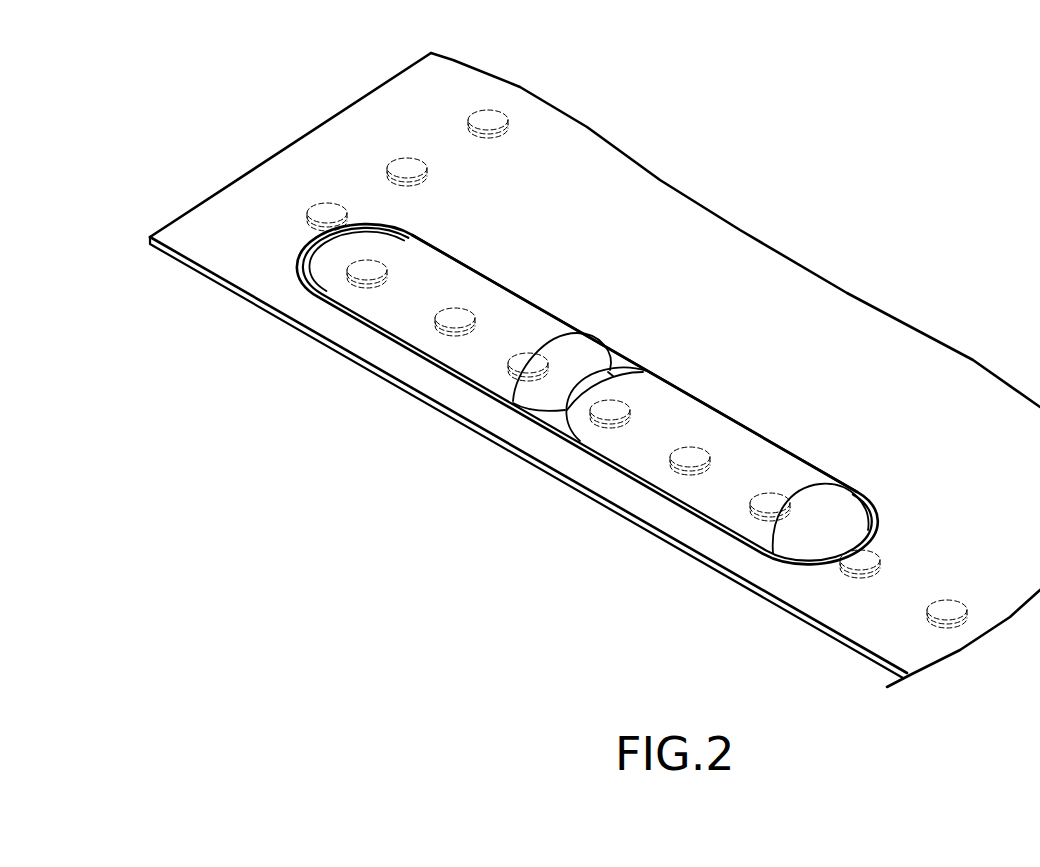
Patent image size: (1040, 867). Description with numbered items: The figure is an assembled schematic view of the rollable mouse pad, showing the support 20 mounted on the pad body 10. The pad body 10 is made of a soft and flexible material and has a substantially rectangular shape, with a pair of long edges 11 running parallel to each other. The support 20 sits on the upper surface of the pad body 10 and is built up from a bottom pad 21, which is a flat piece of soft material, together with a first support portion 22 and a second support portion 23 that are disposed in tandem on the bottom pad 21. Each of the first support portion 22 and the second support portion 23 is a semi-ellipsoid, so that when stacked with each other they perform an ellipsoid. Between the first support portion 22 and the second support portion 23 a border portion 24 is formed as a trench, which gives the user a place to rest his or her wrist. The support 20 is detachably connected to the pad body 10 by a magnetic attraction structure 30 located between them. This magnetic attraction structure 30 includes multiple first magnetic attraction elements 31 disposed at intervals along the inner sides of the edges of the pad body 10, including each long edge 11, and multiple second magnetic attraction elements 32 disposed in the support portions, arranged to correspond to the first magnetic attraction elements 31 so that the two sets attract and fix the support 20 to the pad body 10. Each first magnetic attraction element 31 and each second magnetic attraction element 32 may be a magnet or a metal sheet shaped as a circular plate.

The pad body 10 is at (265, 154).
The long edge 11 is at (272, 311).
The support 20 is at (948, 268).
The bottom pad 21 is at (870, 523).
The first support portion 22 is at (737, 447).
The second support portion 23 is at (465, 285).
The border portion 24 is at (632, 337).
The magnetic attraction structure 30 is at (393, 467).
The first magnetic attraction element 31 is at (447, 332).
The second magnetic attraction element 32 is at (440, 313).